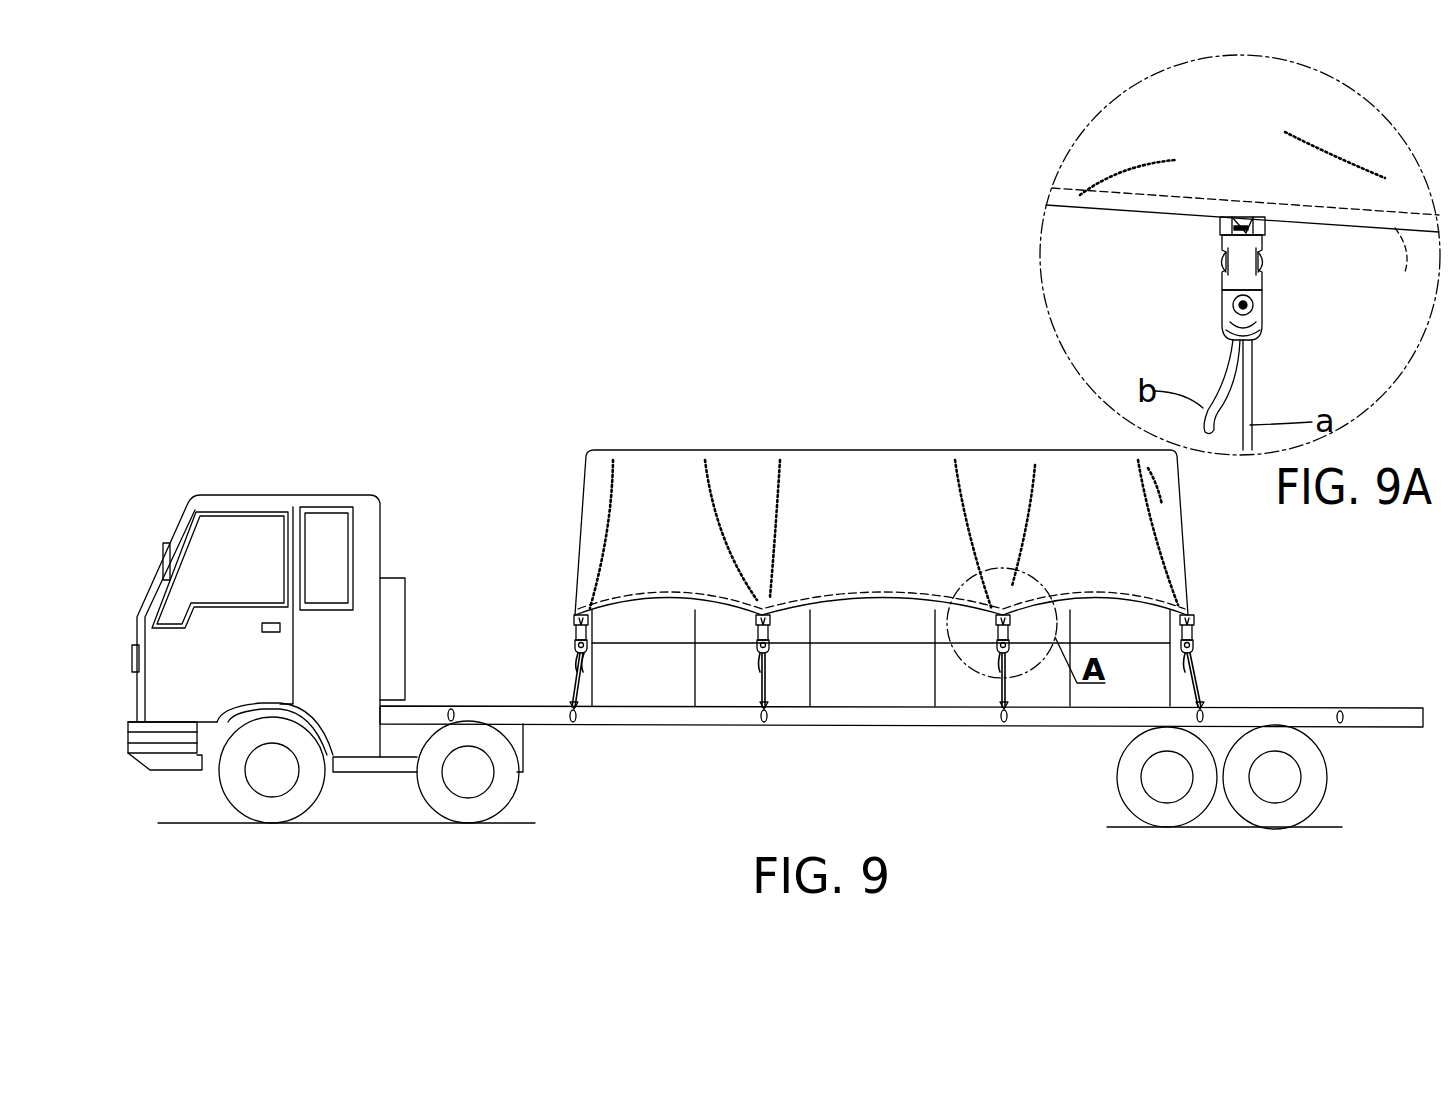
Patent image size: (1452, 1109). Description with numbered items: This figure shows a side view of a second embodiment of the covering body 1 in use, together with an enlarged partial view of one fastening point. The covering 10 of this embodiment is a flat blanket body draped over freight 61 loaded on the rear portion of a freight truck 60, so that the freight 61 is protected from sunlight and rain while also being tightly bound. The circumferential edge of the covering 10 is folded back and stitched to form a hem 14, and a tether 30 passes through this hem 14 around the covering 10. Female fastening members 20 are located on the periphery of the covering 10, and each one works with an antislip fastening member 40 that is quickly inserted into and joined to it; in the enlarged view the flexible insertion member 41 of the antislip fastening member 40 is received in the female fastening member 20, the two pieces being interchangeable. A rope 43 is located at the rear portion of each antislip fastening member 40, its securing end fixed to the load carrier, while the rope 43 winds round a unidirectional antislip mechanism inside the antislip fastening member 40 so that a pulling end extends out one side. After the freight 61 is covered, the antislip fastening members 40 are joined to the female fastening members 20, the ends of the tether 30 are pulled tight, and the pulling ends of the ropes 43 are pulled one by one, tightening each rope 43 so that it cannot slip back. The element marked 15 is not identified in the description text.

In FIG. 9, the covering body 1 is at (818, 452).
In FIG. 9, the covering 10 is at (590, 486).
In FIG. 9A, the covering 10 is at (1085, 150).
In FIG. 9A, the hem 14 is at (1407, 273).
In FIG. 9A, the attachment loop tab 15 is at (1268, 226).
In FIG. 9, the female fastening member 20 is at (578, 617).
In FIG. 9A, the female fastening member 20 is at (1233, 280).
In FIG. 9A, the tether 30 is at (1218, 228).
In FIG. 9, the antislip fastening member 40 is at (575, 636).
In FIG. 9A, the antislip fastening member 40 is at (1262, 313).
In FIG. 9A, the flexible insertion member 41 is at (1262, 262).
In FIG. 9, the rope 43 is at (578, 688).
In FIG. 9A, the rope 43 is at (1247, 375).
In FIG. 9, the freight truck 60 is at (313, 502).
In FIG. 9, the freight 61 is at (876, 686).